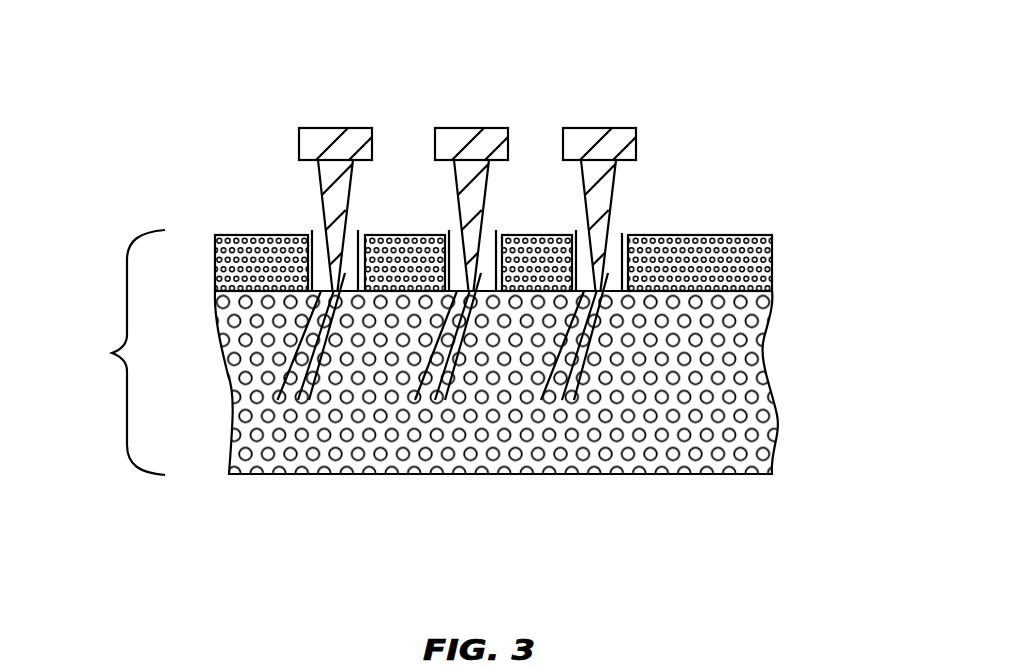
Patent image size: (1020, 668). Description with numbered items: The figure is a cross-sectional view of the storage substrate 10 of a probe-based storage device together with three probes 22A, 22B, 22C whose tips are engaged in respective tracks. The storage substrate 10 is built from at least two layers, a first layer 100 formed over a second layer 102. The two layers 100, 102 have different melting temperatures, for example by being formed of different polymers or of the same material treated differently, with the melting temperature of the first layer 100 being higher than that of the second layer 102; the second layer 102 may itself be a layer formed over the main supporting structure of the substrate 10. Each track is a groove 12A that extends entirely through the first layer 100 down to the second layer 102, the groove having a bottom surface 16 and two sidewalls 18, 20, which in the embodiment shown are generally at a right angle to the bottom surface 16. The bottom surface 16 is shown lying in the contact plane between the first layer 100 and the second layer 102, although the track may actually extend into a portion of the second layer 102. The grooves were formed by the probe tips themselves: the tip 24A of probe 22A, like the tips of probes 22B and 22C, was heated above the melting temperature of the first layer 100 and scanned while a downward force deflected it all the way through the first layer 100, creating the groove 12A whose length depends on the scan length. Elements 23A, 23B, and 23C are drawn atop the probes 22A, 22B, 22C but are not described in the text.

The storage substrate 10 is at (118, 352).
The groove 12A is at (298, 400).
The bottom surface 16 is at (309, 400).
The sidewall 18 is at (312, 230).
The sidewall 20 is at (358, 230).
The probe 22A is at (327, 130).
The probe 22B is at (470, 130).
The probe 22C is at (598, 130).
The cap layer 23A is at (300, 137).
The cap layer 23B is at (437, 137).
The cap layer 23C is at (564, 130).
The tip 24A is at (278, 400).
The first layer 100 is at (223, 260).
The second layer 102 is at (235, 397).